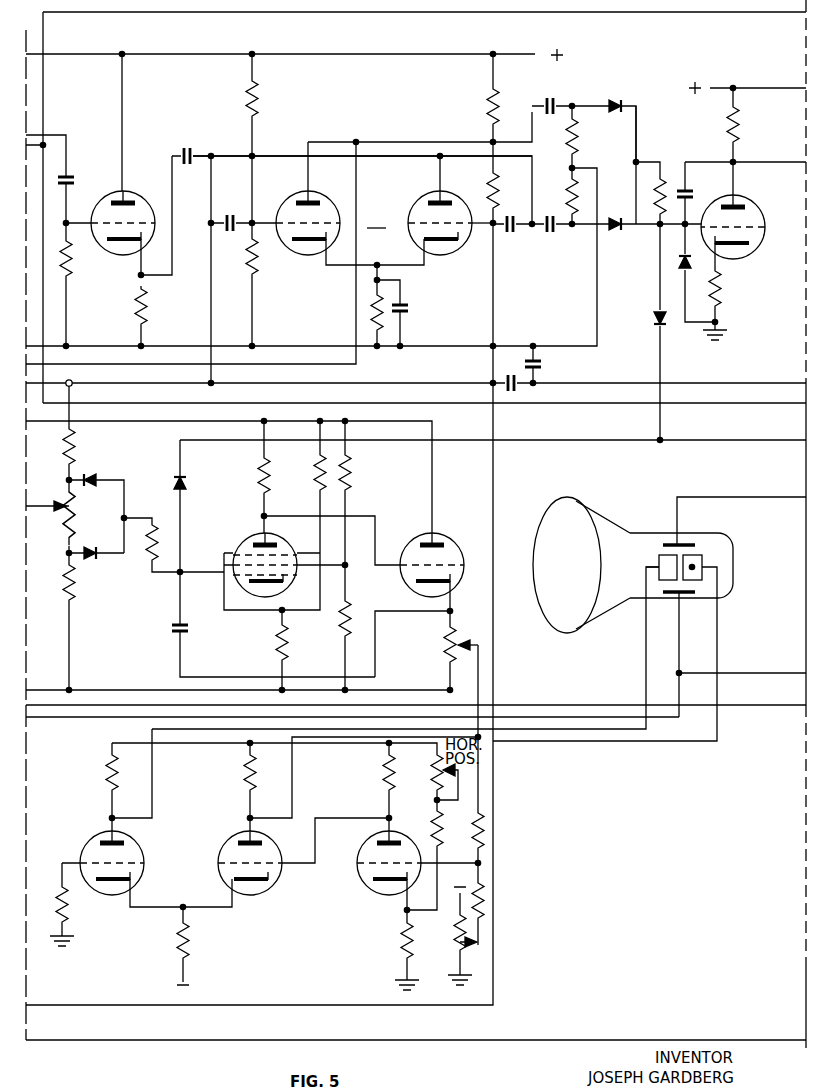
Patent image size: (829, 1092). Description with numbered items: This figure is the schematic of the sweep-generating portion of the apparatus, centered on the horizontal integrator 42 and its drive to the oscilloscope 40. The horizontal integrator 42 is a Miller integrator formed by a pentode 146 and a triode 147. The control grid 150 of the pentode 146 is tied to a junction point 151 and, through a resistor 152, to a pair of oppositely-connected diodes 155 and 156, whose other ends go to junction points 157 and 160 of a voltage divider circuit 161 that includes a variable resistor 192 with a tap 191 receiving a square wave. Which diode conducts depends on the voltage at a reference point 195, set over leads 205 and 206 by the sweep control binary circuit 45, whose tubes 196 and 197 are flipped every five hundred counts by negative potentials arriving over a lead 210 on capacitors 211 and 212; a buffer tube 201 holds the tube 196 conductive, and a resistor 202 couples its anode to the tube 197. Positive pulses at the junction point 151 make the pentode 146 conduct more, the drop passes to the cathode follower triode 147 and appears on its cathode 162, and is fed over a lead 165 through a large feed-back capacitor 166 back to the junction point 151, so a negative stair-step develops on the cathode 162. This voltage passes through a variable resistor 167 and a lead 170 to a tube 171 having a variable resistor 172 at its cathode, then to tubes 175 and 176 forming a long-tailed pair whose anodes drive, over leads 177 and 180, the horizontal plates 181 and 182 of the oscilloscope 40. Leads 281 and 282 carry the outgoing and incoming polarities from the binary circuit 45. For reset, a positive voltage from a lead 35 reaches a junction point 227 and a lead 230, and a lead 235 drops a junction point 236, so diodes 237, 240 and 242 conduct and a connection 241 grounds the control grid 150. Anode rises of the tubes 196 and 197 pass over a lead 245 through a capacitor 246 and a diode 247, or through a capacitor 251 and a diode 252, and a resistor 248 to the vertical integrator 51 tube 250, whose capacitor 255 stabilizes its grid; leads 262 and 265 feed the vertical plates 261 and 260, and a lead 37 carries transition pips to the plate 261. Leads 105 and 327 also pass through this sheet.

The lead 230 is at (367, 13).
The junction point 227 is at (46, 144).
The buffer tube 201 is at (112, 190).
The lead 206 is at (211, 300).
The lead 205 is at (372, 158).
The tube 196 is at (296, 192).
The lead 245 is at (391, 142).
The tube 197 is at (412, 196).
The lead 282 is at (356, 300).
The sweep control binary circuit 45 is at (376, 219).
The resistor 202 is at (486, 178).
The capacitor 251 is at (549, 231).
The diode 252 is at (612, 232).
The capacitor 246 is at (548, 100).
The diode 247 is at (620, 102).
The resistor 248 is at (664, 178).
The diode 237 is at (652, 319).
The capacitor 255 is at (689, 192).
The diode 240 is at (683, 263).
The vertical integrator tube 250 is at (752, 206).
The connection 241 is at (733, 340).
The vertical integrator 51 is at (749, 262).
The lead 210 is at (696, 383).
The capacitor 212 is at (505, 378).
The capacitor 211 is at (545, 361).
The lead 35 is at (440, 405).
The lead 235 is at (705, 440).
The junction point 236 is at (658, 438).
The lead 281 is at (496, 470).
The reference point 195 is at (72, 385).
The junction point 157 is at (66, 480).
The variable resistor 192 is at (76, 520).
The tap 191 is at (62, 500).
The junction point 160 is at (66, 553).
The voltage divider circuit 161 is at (60, 566).
The diode 155 is at (90, 477).
The diode 156 is at (92, 562).
The resistor 152 is at (162, 520).
The diode 242 is at (188, 483).
The junction point 151 is at (178, 576).
The horizontal integrator 42 is at (168, 602).
The pentode 146 is at (250, 535).
The triode 147 is at (418, 535).
The control grid 150 is at (285, 585).
The feed-back capacitor 166 is at (190, 630).
The lead 165 is at (425, 618).
The cathode 162 is at (410, 598).
The variable resistor 167 is at (445, 647).
The lead 170 is at (482, 677).
The lead 105 is at (532, 706).
The lead 37 is at (68, 720).
The oscilloscope 40 is at (604, 502).
The left-hand horizontal plate 182 is at (652, 530).
The vertical plate 260 is at (695, 540).
The lead 265 is at (782, 497).
The right-hand horizontal plate 181 is at (702, 562).
The lower vertical plate 261 is at (665, 595).
The lead 262 is at (736, 673).
The lead 180 is at (155, 783).
The tube 176 is at (95, 835).
The tube 175 is at (230, 835).
The lead 177 is at (295, 790).
The tube 171 is at (365, 882).
The variable resistor 172 is at (434, 778).
The lead 327 is at (527, 1040).